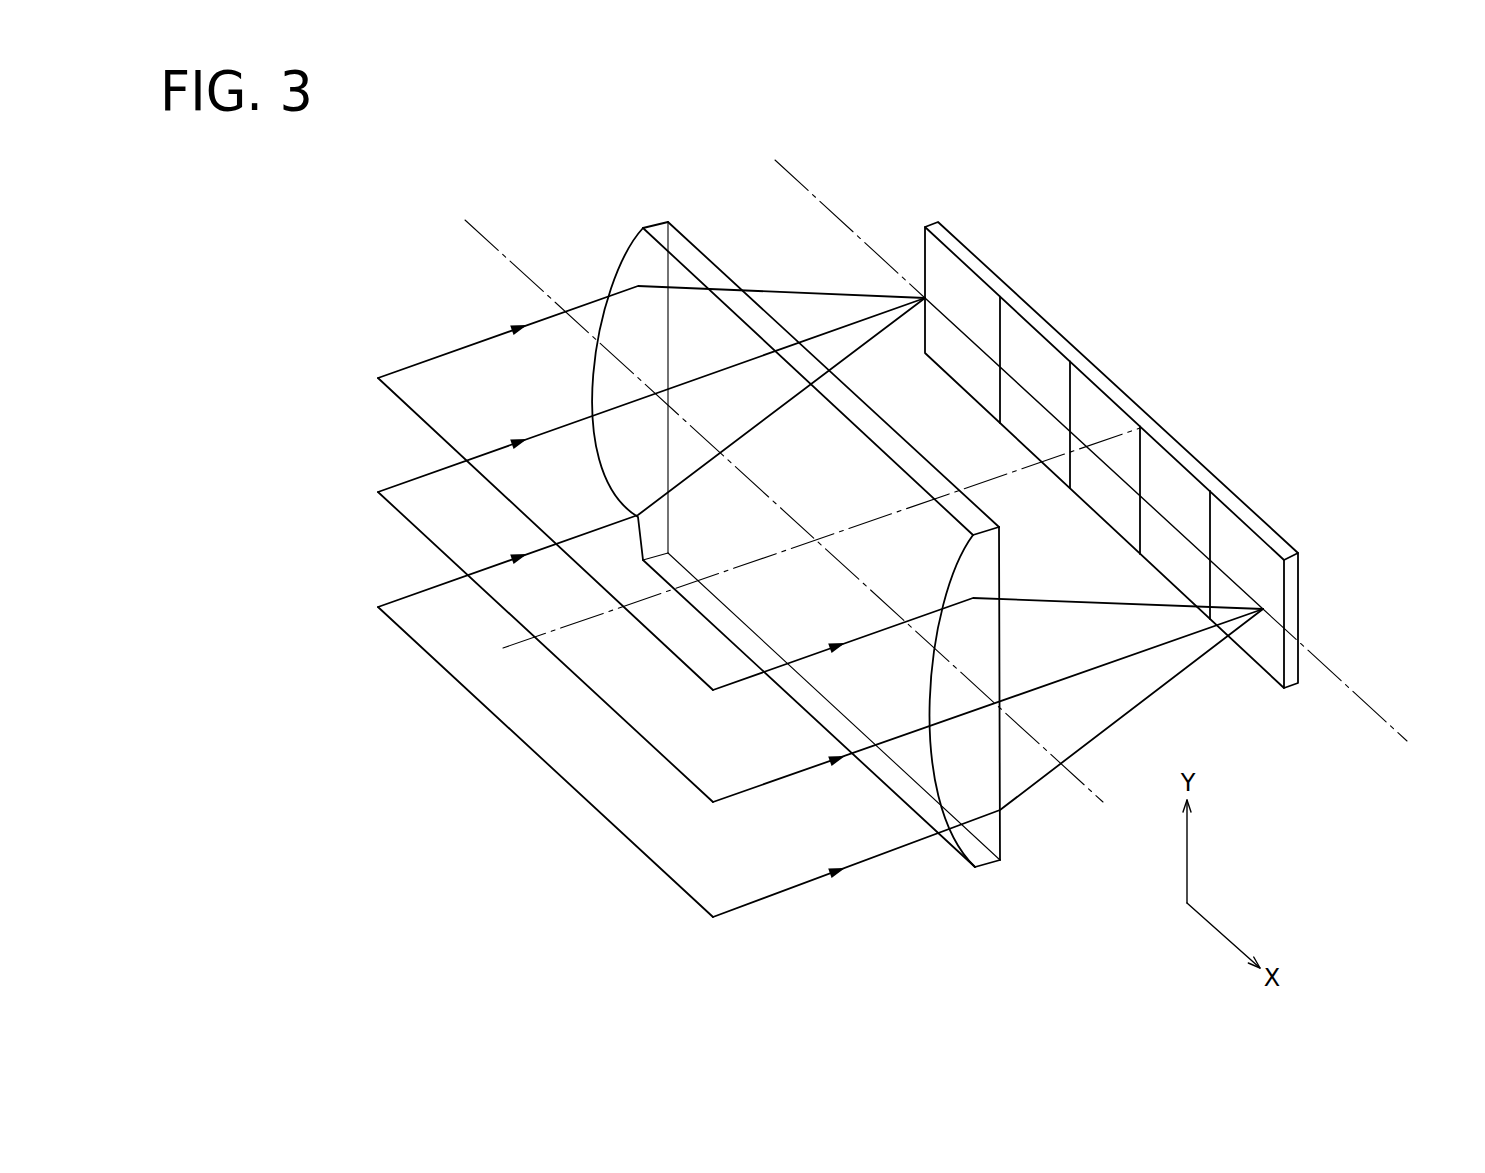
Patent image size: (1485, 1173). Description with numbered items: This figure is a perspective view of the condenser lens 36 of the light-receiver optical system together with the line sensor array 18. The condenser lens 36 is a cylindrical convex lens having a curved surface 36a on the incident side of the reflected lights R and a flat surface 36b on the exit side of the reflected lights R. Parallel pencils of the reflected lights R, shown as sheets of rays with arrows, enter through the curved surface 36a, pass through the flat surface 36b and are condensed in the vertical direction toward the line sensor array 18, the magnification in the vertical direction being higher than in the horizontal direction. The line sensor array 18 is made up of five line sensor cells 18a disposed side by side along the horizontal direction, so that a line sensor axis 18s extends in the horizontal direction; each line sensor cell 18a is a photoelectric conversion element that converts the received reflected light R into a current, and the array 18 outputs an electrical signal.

The line sensor array 18 is at (1172, 326).
The line sensor cell 18a is at (970, 288).
The line sensor axis 18s is at (802, 178).
The condenser lens 36 is at (657, 228).
The curved surface 36a is at (617, 283).
The flat surface 36b is at (1002, 830).
The reflected lights R is at (433, 357).